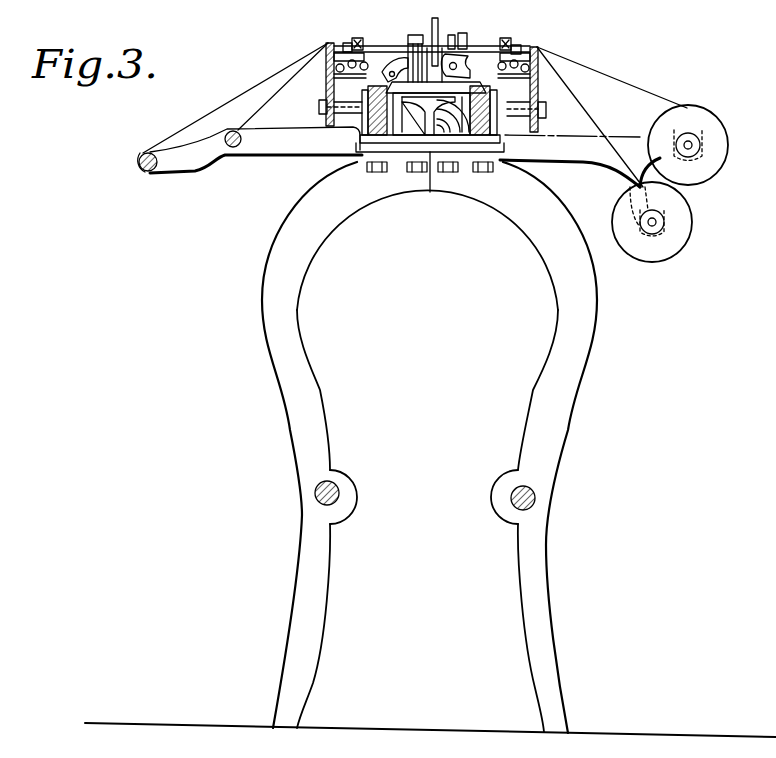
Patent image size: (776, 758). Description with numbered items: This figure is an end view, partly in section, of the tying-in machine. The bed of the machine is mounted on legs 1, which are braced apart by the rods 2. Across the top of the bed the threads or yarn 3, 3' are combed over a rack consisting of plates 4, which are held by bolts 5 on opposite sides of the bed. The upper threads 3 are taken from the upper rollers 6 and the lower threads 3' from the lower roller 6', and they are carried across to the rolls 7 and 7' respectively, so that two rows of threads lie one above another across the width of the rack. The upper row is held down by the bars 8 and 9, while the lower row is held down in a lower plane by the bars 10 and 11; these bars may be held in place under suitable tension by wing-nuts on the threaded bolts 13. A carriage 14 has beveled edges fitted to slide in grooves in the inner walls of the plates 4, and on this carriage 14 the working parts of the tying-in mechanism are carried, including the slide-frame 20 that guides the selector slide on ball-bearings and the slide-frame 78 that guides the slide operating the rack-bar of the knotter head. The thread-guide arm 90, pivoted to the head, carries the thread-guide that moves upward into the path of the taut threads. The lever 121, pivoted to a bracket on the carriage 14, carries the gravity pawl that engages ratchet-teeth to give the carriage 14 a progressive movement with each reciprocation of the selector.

The legs 1 is at (315, 410).
The rods 2 is at (330, 495).
The threads or yarn 3 is at (612, 77).
The threads or yarn 3' is at (590, 117).
The plates 4 is at (326, 70).
The bolts 5 is at (319, 105).
The upper rollers 6 is at (688, 133).
The lower roller 6' is at (663, 222).
The roll 7 is at (245, 122).
The roll 7' is at (276, 98).
The bar 8 is at (358, 38).
The bar 9 is at (508, 40).
The bar 10 is at (344, 45).
The bar 11 is at (521, 50).
The threaded bolts 13 is at (334, 80).
The carriage 14 is at (467, 93).
The slide-frame 20 is at (436, 16).
The slide-frame 78 is at (456, 33).
The thread-guide arm 90 is at (462, 56).
The lever 121 is at (394, 62).